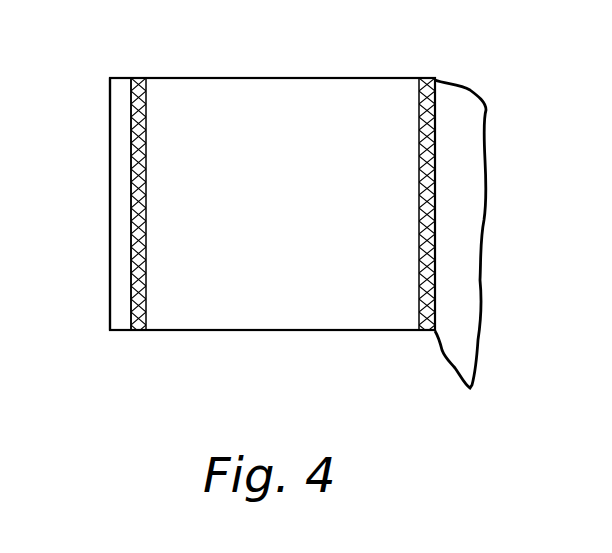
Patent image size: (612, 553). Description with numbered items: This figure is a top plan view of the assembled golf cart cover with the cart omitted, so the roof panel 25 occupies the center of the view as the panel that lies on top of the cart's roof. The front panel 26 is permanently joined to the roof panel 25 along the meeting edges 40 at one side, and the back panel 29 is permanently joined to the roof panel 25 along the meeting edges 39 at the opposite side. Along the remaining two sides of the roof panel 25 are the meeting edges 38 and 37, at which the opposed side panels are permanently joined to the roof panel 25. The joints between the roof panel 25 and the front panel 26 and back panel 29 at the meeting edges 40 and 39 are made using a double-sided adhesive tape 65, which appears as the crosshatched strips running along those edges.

The roof panel 25 is at (298, 198).
The front panel 26 is at (120, 223).
The back panel 29 is at (472, 157).
The meeting edge 37 is at (309, 78).
The meeting edge 38 is at (308, 331).
The meeting edges 39 is at (436, 244).
The meeting edges 40 is at (131, 293).
The double-sided adhesive tape 65 is at (140, 80).